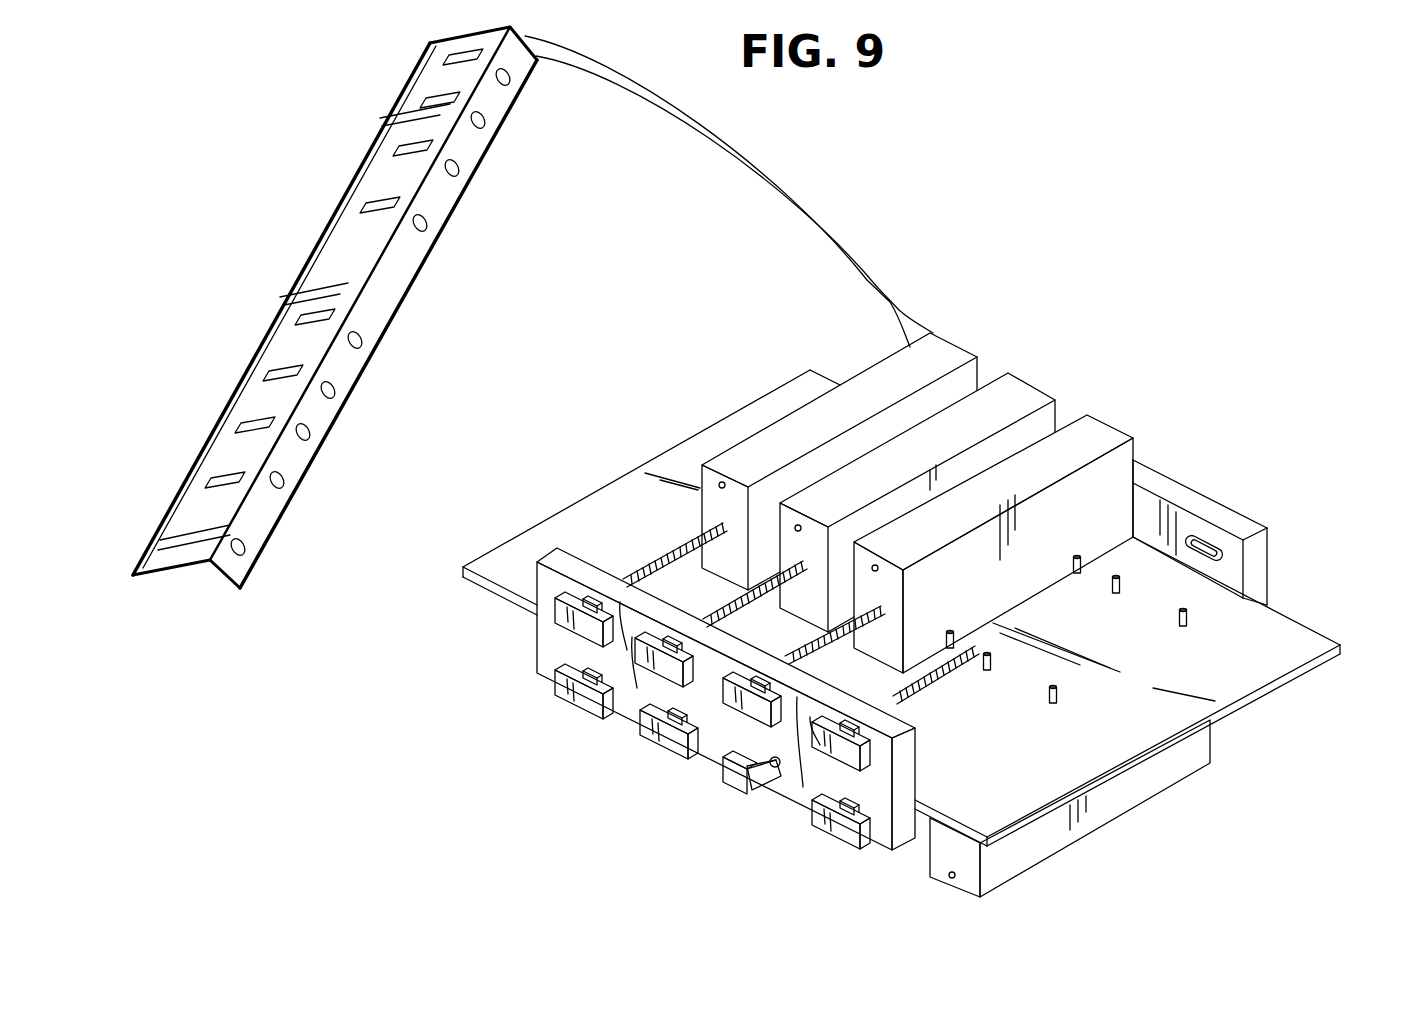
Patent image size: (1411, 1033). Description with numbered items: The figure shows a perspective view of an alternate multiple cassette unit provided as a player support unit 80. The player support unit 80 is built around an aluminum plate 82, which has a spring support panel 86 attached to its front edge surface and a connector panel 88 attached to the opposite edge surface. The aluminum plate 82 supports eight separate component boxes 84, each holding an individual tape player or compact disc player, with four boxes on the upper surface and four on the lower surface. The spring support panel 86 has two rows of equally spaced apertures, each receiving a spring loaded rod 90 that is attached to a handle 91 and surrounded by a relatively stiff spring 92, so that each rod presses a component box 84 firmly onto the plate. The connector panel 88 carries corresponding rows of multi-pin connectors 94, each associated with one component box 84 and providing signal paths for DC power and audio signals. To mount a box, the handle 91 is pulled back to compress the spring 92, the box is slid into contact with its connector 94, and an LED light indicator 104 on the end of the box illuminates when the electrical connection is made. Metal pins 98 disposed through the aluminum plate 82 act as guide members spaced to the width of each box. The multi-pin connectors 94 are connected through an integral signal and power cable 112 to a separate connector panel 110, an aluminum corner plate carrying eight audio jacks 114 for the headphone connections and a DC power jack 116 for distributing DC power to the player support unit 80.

The player support unit 80 is at (937, 618).
The aluminum plate 82 is at (1275, 683).
The component boxes 84 is at (973, 355).
The spring support panel 86 is at (540, 655).
The connector panel 88 is at (1265, 553).
The spring loaded rod 90 is at (812, 805).
The handle 91 is at (723, 777).
The spring 92 is at (670, 553).
The multi-pin connectors 94 is at (1222, 552).
The metal pins 98 is at (1183, 628).
The LED light indicator 104 is at (723, 485).
The connector panel 110 is at (165, 566).
The signal and power cable 112 is at (661, 101).
The audio jacks 114 is at (357, 348).
The DC power jack 116 is at (245, 553).